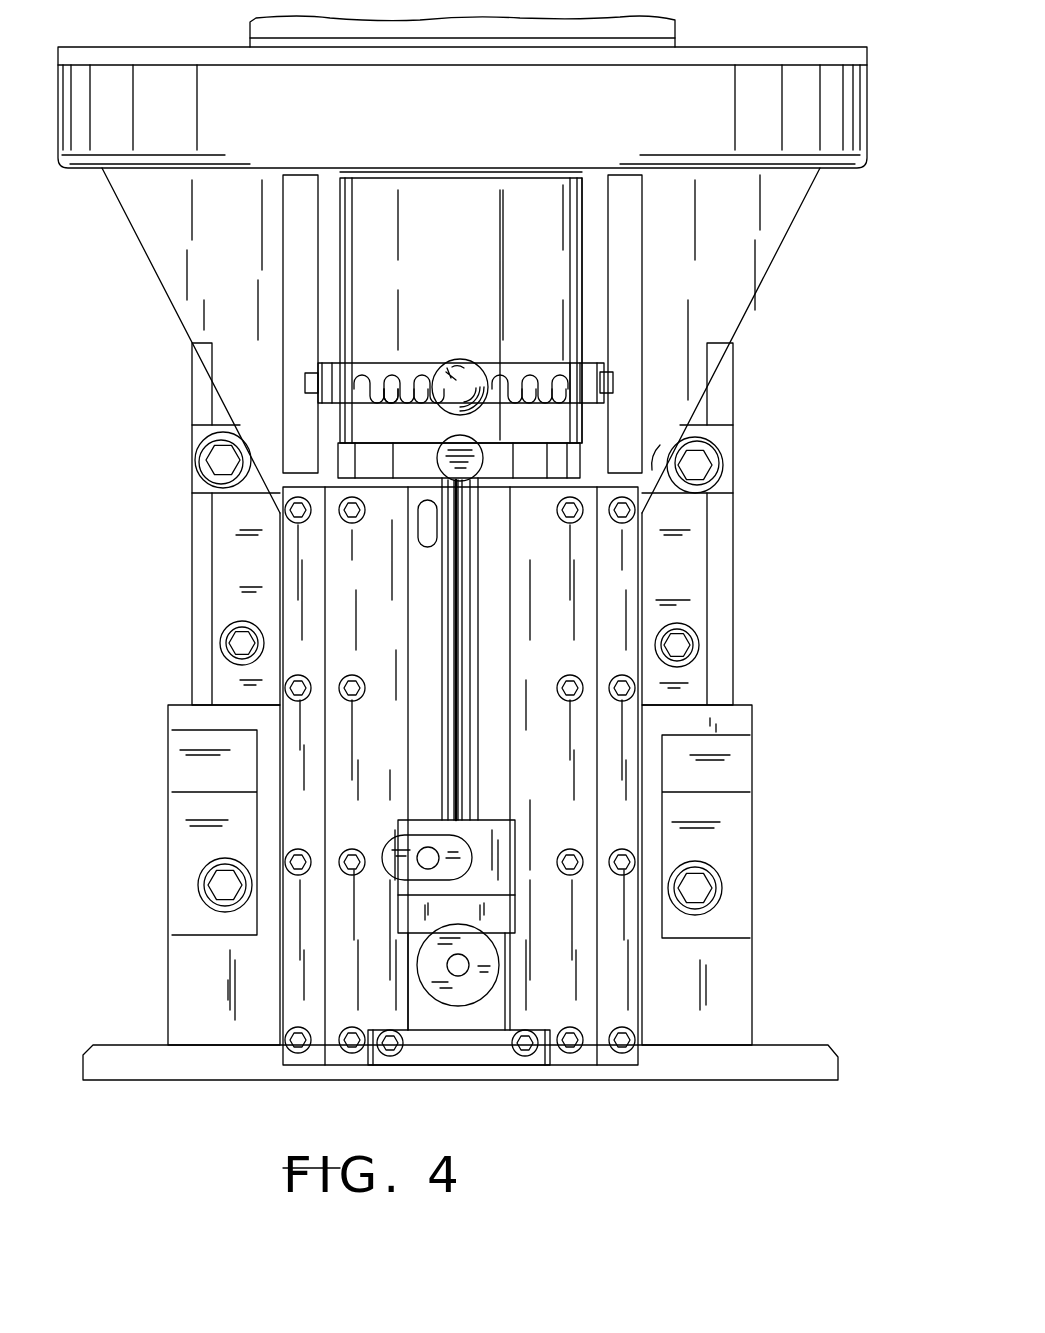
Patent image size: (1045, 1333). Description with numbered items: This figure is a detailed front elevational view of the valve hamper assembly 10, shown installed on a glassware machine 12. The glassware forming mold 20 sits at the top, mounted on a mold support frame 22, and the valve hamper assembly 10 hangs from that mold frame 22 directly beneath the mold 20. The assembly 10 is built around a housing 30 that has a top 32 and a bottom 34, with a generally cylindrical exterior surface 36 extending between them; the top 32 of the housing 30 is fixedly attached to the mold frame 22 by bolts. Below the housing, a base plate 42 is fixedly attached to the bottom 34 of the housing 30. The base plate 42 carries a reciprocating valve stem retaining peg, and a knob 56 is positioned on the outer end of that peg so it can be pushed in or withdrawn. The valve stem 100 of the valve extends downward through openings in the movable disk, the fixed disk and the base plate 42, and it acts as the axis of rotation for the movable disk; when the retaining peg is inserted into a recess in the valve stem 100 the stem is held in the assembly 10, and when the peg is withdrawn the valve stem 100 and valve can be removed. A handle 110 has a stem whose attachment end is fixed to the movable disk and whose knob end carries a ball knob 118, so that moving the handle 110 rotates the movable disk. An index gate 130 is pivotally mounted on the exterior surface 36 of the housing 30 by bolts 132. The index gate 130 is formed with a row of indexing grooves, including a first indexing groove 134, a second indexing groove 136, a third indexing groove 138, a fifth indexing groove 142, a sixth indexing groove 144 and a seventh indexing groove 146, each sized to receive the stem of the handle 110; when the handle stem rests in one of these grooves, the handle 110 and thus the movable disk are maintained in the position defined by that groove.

The valve hamper assembly 10 is at (606, 276).
The glassware machine 12 is at (188, 594).
The glassware forming mold 20 is at (678, 28).
The mold support frame 22 is at (135, 222).
The housing 30 is at (583, 200).
The top 32 is at (343, 175).
The bottom 34 is at (338, 452).
The exterior surface 36 is at (583, 230).
The base plate 42 is at (583, 465).
The knob 56 is at (437, 467).
The valve stem 100 is at (478, 748).
The handle 110 is at (440, 360).
The ball knob 118 is at (486, 404).
The index gate 130 is at (393, 403).
The bolts 132 is at (305, 378).
The first indexing groove 134 is at (362, 375).
The second indexing groove 136 is at (392, 378).
The third indexing groove 138 is at (424, 380).
The fifth indexing groove 142 is at (460, 359).
The sixth indexing groove 144 is at (530, 375).
The seventh indexing groove 146 is at (581, 333).